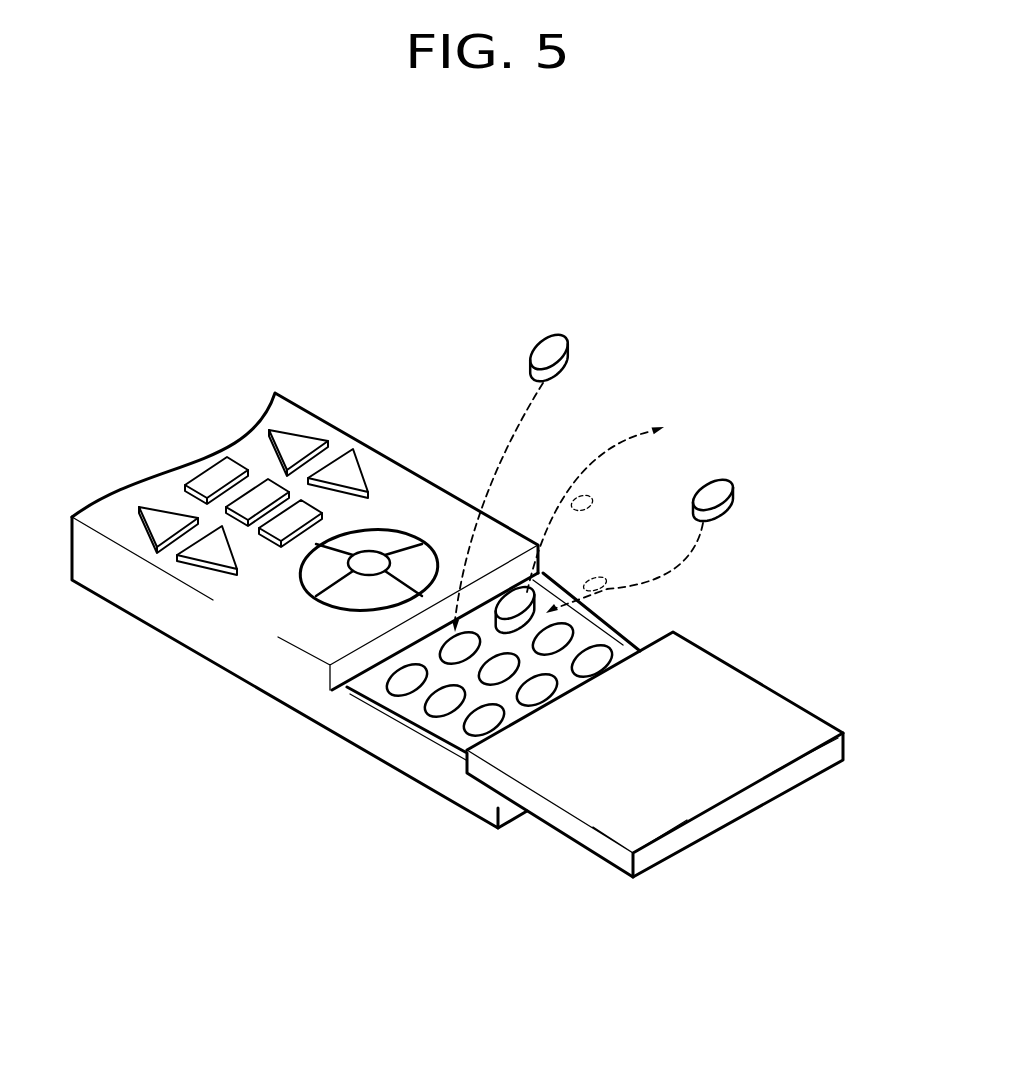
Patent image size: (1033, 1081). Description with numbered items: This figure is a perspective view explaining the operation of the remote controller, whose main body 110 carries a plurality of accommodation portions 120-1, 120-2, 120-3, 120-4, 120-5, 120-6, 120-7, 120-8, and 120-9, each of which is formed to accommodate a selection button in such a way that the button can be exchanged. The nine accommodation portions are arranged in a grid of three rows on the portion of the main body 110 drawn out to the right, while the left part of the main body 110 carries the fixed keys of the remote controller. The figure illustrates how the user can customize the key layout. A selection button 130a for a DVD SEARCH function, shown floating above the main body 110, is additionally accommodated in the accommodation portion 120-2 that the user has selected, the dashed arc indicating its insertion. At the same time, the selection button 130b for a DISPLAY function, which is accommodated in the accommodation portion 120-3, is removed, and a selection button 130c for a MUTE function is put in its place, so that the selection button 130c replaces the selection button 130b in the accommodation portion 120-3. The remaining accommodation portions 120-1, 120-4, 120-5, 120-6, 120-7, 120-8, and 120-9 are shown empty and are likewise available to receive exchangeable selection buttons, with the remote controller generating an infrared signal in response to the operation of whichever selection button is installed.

The main body 110 is at (130, 603).
The accommodation portion 120-1 is at (388, 686).
The accommodation portion 120-2 is at (450, 636).
The accommodation portion 120-3 is at (576, 621).
The accommodation portion 120-4 is at (431, 710).
The accommodation portion 120-5 is at (484, 679).
The accommodation portion 120-6 is at (573, 638).
The accommodation portion 120-7 is at (467, 729).
The accommodation portion 120-8 is at (528, 698).
The accommodation portion 120-9 is at (593, 664).
The selection button for DVD SEARCH function 130a is at (527, 362).
The selection button for DISPLAY function 130b is at (521, 586).
The selection button for MUTE function 130c is at (737, 500).